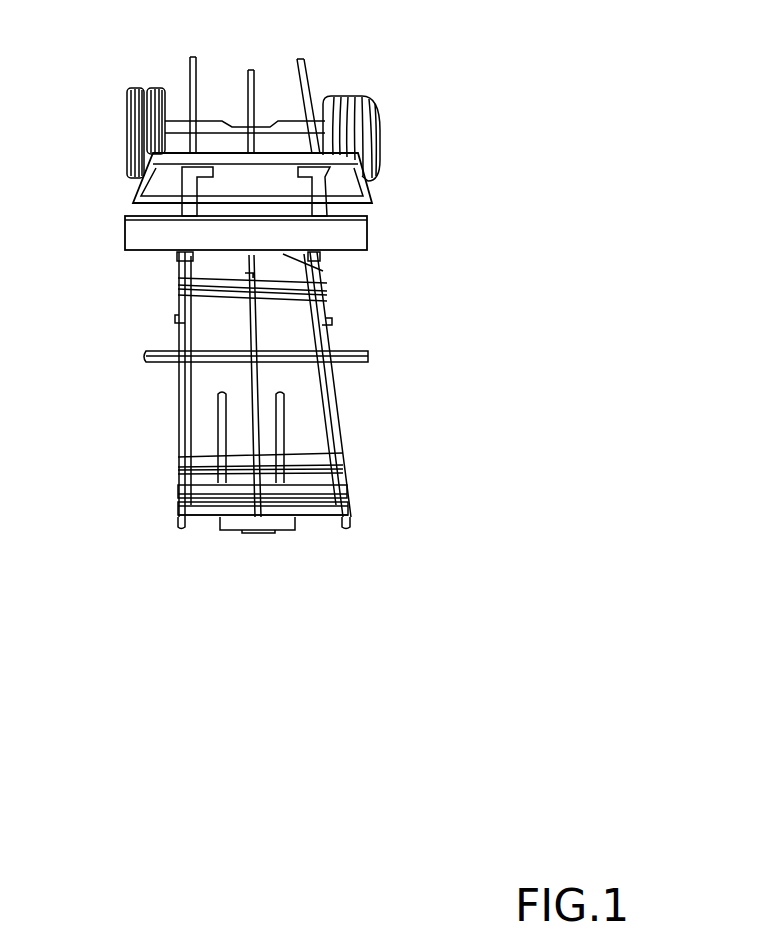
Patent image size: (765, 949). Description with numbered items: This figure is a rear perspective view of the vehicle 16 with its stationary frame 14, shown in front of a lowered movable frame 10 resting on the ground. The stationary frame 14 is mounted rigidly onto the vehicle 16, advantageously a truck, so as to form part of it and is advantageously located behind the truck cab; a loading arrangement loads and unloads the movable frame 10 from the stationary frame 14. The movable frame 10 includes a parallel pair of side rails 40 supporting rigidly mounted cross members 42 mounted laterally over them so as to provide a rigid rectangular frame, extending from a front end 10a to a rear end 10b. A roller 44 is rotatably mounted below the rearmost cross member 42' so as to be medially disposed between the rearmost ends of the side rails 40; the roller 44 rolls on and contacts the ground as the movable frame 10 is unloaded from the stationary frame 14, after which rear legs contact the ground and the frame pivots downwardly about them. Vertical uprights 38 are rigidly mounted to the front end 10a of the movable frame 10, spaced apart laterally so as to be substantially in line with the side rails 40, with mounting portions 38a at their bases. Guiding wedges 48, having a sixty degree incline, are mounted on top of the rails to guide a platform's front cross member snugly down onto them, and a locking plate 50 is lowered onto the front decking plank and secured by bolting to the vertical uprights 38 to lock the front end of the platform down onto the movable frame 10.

The movable frame 10 is at (390, 333).
The front end of movable frame 10a is at (312, 264).
The rear end of movable frame 10b is at (370, 520).
The stationary frame 14 is at (308, 64).
The vehicle 16 is at (367, 67).
The vertical uprights 38 is at (197, 210).
The mounting brackets 38a is at (310, 191).
The side rails 40 is at (178, 338).
The cross members 42 is at (258, 388).
The rearmost cross member 42' is at (309, 498).
The roller 44 is at (285, 531).
The guiding wedges 48 is at (173, 253).
The locking plate 50 is at (125, 233).